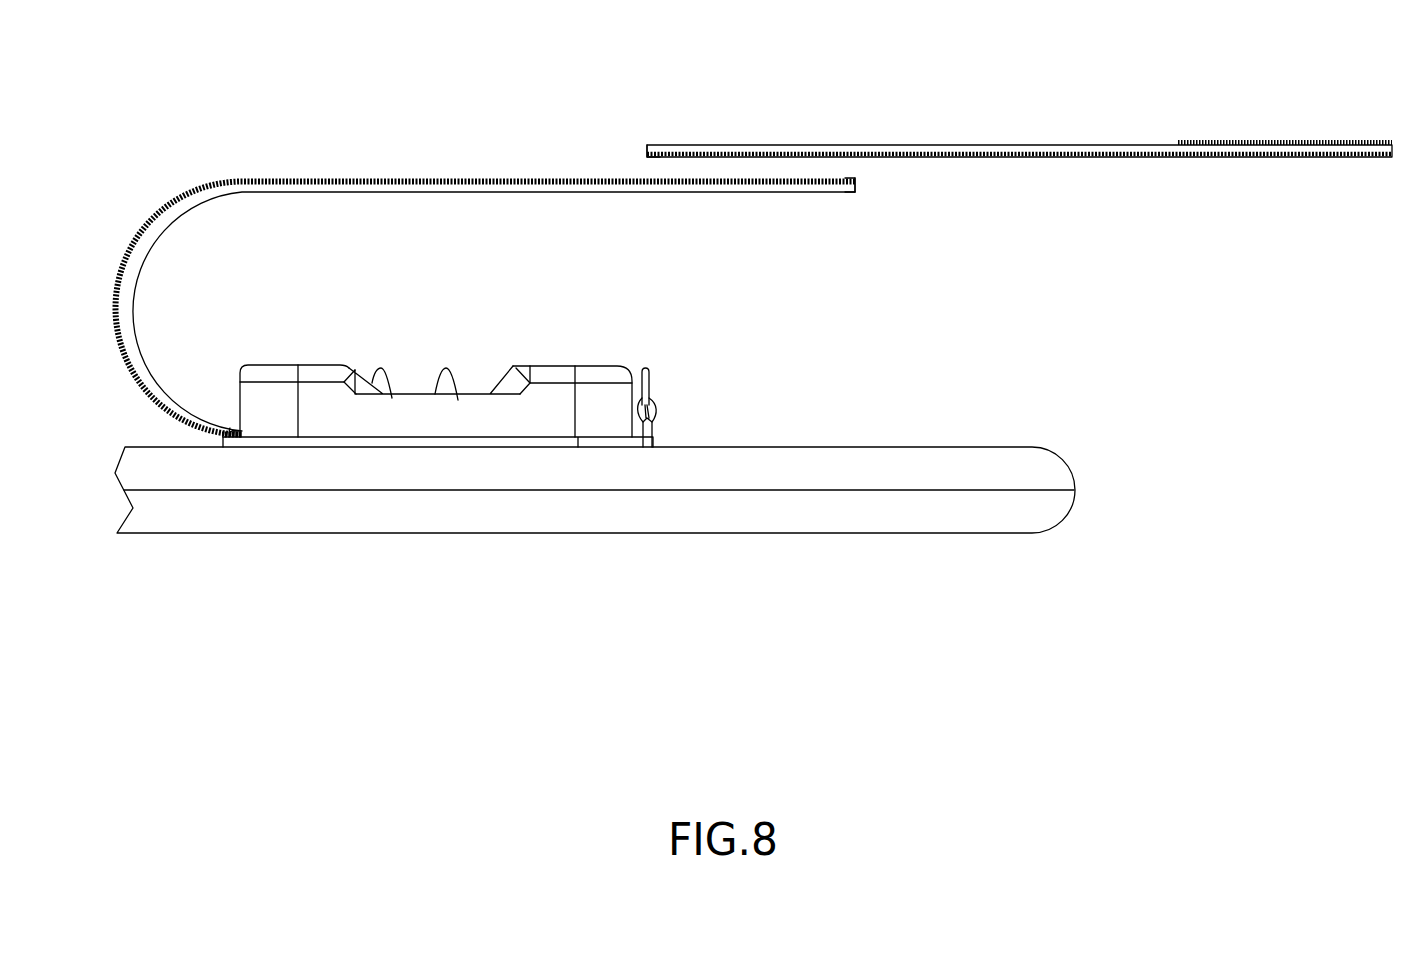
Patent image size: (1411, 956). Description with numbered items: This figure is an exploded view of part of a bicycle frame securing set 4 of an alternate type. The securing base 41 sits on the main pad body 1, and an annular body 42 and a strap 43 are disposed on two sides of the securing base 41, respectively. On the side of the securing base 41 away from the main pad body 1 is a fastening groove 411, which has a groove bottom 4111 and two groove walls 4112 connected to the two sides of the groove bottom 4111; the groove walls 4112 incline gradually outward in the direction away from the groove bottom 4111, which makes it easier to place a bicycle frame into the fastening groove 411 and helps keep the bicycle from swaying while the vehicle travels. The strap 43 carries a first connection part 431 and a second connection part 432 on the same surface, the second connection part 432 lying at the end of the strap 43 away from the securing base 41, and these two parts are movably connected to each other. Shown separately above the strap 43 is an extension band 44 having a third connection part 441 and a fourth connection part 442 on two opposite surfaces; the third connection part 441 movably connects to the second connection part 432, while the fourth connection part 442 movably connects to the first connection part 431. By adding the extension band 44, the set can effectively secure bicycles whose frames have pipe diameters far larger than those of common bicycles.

The main pad body 1 is at (1008, 432).
The bicycle frame securing set 4 is at (627, 308).
The securing base 41 is at (270, 395).
The fastening groove 411 is at (418, 358).
The groove bottom 4111 is at (458, 400).
The groove walls 4112 is at (392, 398).
The annular body 42 is at (650, 383).
The strap 43 is at (538, 251).
The first connection part 431 is at (355, 178).
The second connection part 432 is at (847, 180).
The extension band 44 is at (996, 128).
The third connection part 441 is at (650, 156).
The fourth connection part 442 is at (1225, 140).